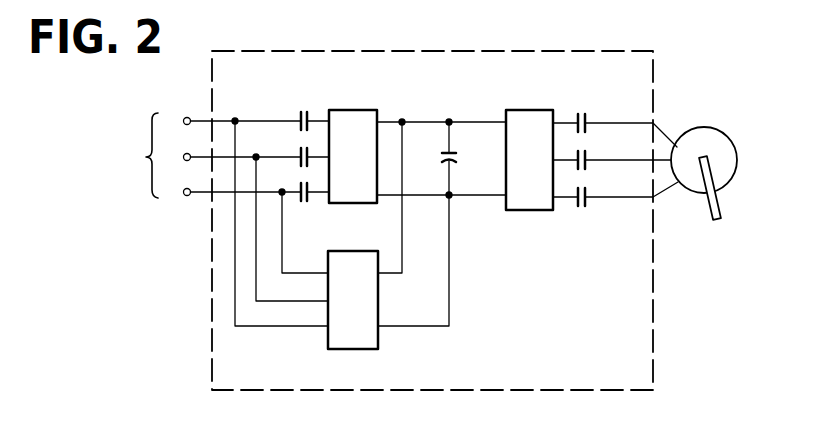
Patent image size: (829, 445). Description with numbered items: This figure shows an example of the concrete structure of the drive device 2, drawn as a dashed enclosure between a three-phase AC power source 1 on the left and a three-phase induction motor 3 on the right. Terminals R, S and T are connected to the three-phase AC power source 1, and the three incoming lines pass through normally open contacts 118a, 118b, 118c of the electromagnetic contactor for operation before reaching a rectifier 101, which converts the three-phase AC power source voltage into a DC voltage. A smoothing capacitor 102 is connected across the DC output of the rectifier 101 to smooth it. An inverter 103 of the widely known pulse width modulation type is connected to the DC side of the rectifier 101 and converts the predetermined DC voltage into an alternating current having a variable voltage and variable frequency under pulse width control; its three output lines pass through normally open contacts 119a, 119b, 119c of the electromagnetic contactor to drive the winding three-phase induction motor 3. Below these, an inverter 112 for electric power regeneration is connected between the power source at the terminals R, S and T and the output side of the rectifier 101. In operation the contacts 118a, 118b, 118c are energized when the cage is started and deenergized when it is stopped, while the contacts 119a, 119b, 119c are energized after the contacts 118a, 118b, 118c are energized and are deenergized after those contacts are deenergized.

The three-phase AC power source 1 is at (160, 156).
The drive device 2 is at (428, 392).
The three-phase induction motor 3 is at (707, 127).
The rectifier 101 is at (355, 110).
The smoothing capacitor 102 is at (480, 155).
The inverter 103 is at (532, 110).
The inverter for electric power regeneration 112 is at (379, 340).
The normally open contact of the electromagnetic contactor for operation 118a is at (303, 112).
The normally open contact of the electromagnetic contactor for operation 118b is at (302, 148).
The normally open contact of the electromagnetic contactor for operation 118c is at (305, 204).
The normally open contact of the electromagnetic contactor 119a is at (582, 115).
The normally open contact of the electromagnetic contactor 119b is at (584, 152).
The normally open contact of the electromagnetic contactor 119c is at (582, 206).